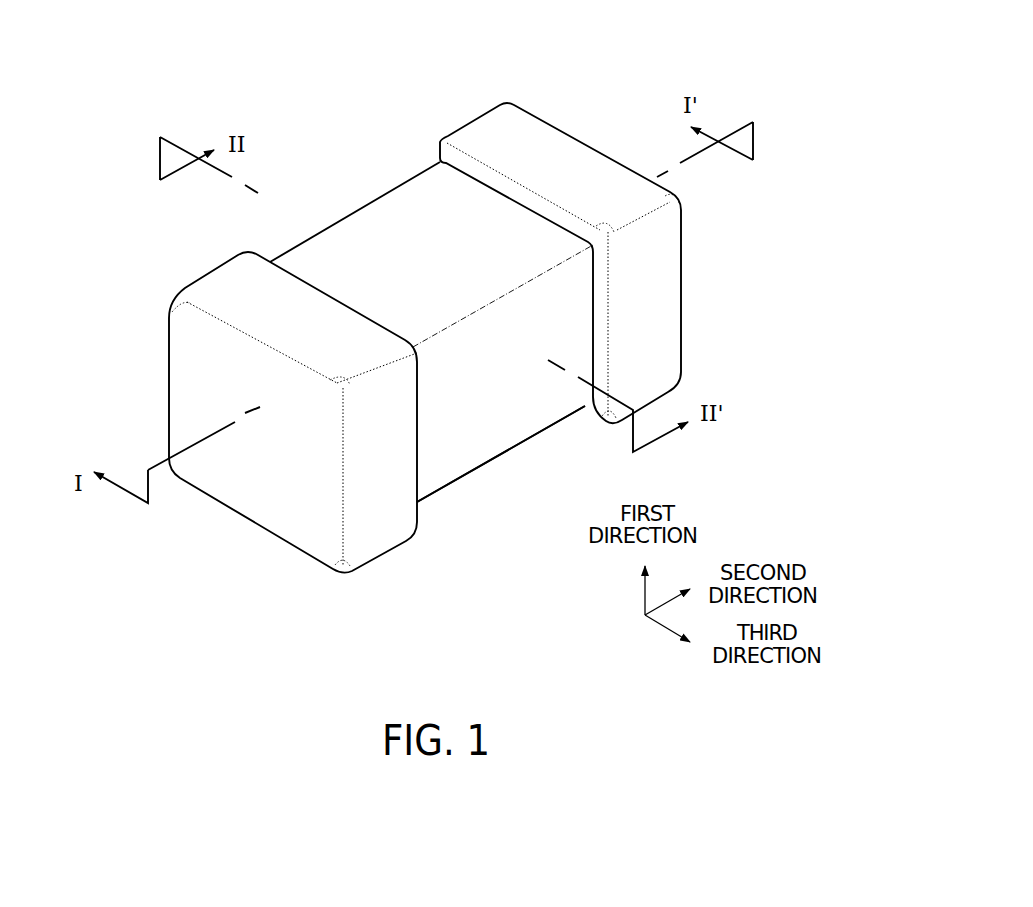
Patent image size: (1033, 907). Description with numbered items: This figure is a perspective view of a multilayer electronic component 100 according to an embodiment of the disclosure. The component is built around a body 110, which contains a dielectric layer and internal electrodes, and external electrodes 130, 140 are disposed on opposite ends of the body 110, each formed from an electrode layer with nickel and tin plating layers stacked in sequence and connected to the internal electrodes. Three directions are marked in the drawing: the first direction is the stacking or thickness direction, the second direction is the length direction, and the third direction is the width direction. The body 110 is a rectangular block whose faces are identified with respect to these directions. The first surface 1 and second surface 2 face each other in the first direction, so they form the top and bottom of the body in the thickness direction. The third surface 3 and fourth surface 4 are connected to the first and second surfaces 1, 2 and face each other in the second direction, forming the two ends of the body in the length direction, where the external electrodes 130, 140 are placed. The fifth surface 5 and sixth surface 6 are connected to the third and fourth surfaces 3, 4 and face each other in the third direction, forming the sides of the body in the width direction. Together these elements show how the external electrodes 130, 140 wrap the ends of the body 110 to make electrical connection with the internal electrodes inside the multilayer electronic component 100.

The multilayer electronic component 100 is at (192, 76).
The body 110 is at (335, 250).
The external electrode 130 is at (232, 282).
The external electrode 140 is at (483, 138).
The first surface 1 is at (473, 424).
The second surface 2 is at (441, 216).
The third surface 3 is at (259, 474).
The fourth surface 4 is at (634, 277).
The fifth surface 5 is at (521, 397).
The sixth surface 6 is at (385, 238).